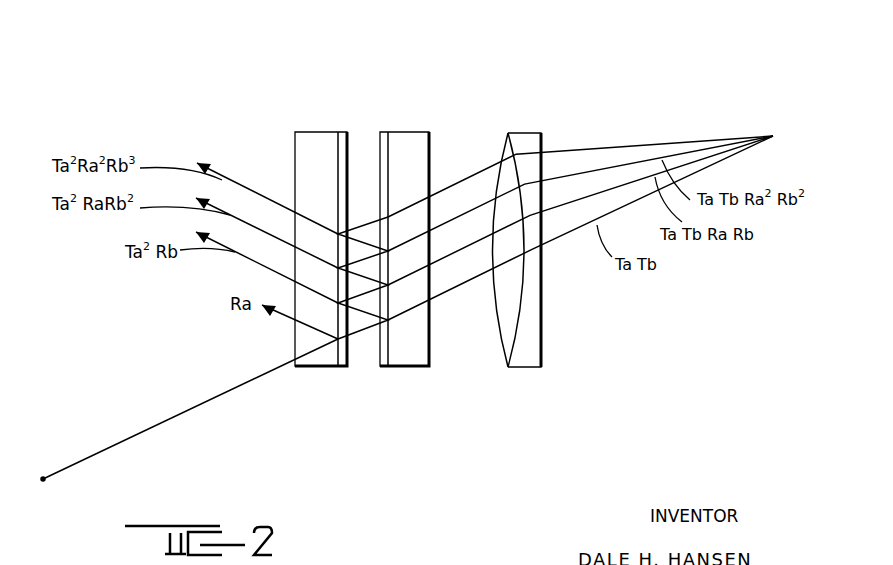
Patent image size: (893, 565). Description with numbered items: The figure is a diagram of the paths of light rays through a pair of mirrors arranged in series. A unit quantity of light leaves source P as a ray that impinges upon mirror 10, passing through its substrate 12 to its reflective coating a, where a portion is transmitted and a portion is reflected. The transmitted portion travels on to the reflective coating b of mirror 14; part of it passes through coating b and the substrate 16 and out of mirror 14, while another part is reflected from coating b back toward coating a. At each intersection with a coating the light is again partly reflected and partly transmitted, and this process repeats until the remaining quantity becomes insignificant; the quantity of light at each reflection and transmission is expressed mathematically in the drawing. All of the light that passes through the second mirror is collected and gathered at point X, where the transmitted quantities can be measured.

The mirror 10 is at (299, 224).
The substrate 12 is at (299, 225).
The mirror 14 is at (429, 224).
The substrate 16 is at (429, 226).
The reflective coating a is at (340, 130).
The reflective coating b is at (386, 130).
The source P is at (183, 410).
The point X is at (590, 223).